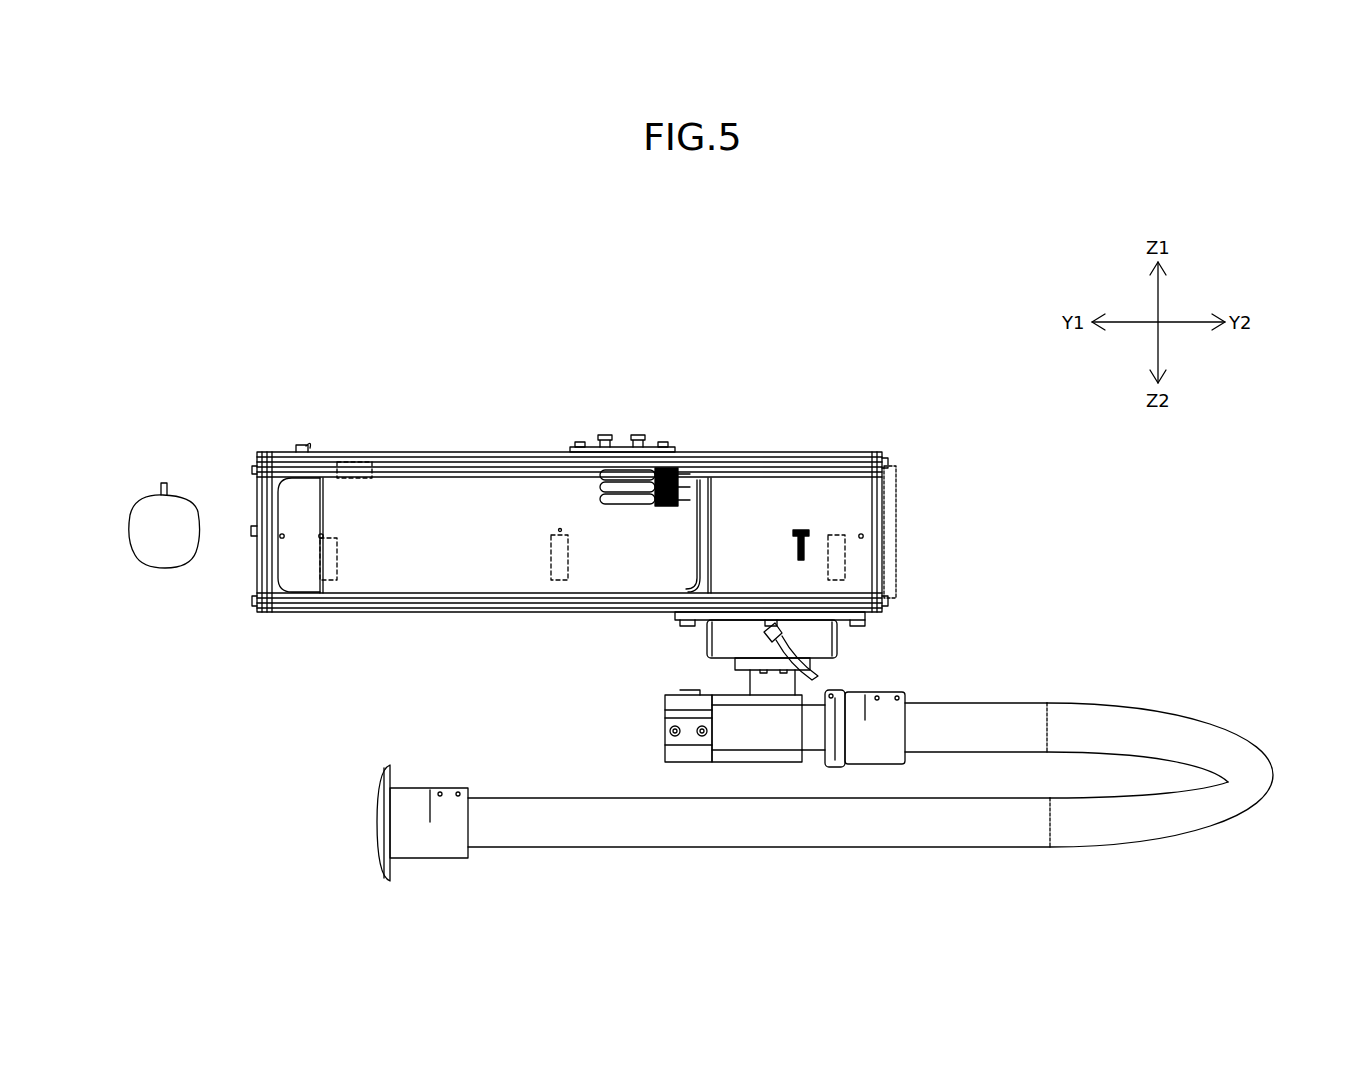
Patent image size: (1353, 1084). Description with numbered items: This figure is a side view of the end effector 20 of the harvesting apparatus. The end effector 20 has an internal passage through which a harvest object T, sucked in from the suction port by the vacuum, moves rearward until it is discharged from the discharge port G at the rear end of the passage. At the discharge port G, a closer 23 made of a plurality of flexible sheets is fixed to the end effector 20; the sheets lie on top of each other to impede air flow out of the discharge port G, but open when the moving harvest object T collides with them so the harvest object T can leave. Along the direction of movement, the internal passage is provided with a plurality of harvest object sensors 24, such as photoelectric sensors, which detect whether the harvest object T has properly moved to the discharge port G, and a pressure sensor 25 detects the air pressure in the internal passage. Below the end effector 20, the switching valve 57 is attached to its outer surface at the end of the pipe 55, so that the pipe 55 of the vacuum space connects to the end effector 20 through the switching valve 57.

The end effector 20 is at (558, 425).
The closer 23 is at (900, 566).
The harvest object sensor 24 is at (337, 583).
The pressure sensor 25 is at (356, 460).
The pipe 55 is at (1032, 708).
The switching valve 57 is at (815, 635).
The discharge port G is at (912, 512).
The harvest object T is at (166, 570).